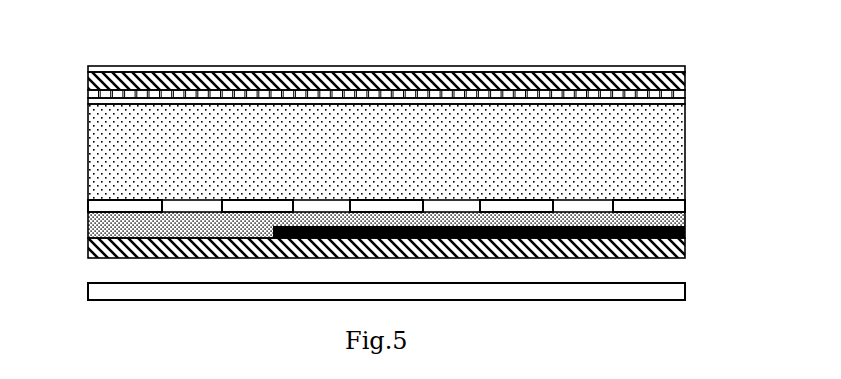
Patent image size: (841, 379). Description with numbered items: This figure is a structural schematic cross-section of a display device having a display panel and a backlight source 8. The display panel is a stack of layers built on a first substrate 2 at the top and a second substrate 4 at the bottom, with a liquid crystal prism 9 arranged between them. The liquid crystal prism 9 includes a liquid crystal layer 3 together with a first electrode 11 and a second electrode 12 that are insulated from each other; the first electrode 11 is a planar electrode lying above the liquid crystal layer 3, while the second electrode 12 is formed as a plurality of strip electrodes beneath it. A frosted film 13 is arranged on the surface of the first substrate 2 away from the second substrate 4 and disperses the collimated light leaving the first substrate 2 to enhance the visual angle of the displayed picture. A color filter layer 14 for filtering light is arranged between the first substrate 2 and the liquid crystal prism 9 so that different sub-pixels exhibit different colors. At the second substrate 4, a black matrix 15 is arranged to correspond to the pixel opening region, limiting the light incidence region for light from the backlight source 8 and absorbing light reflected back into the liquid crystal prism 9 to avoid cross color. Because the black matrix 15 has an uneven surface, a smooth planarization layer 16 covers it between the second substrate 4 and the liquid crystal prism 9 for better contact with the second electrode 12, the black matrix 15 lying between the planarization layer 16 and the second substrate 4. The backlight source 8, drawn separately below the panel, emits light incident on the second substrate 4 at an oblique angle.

The first substrate 2 is at (88, 77).
The liquid crystal layer 3 is at (93, 169).
The second substrate 4 is at (88, 250).
The backlight source 8 is at (92, 293).
The liquid crystal prism 9 is at (33, 97).
The first electrode 11 is at (90, 103).
The second electrode 12 is at (90, 205).
The frosted film 13 is at (683, 69).
The color filter layer 14 is at (88, 95).
The black matrix 15 is at (685, 230).
The planarization layer 16 is at (88, 229).